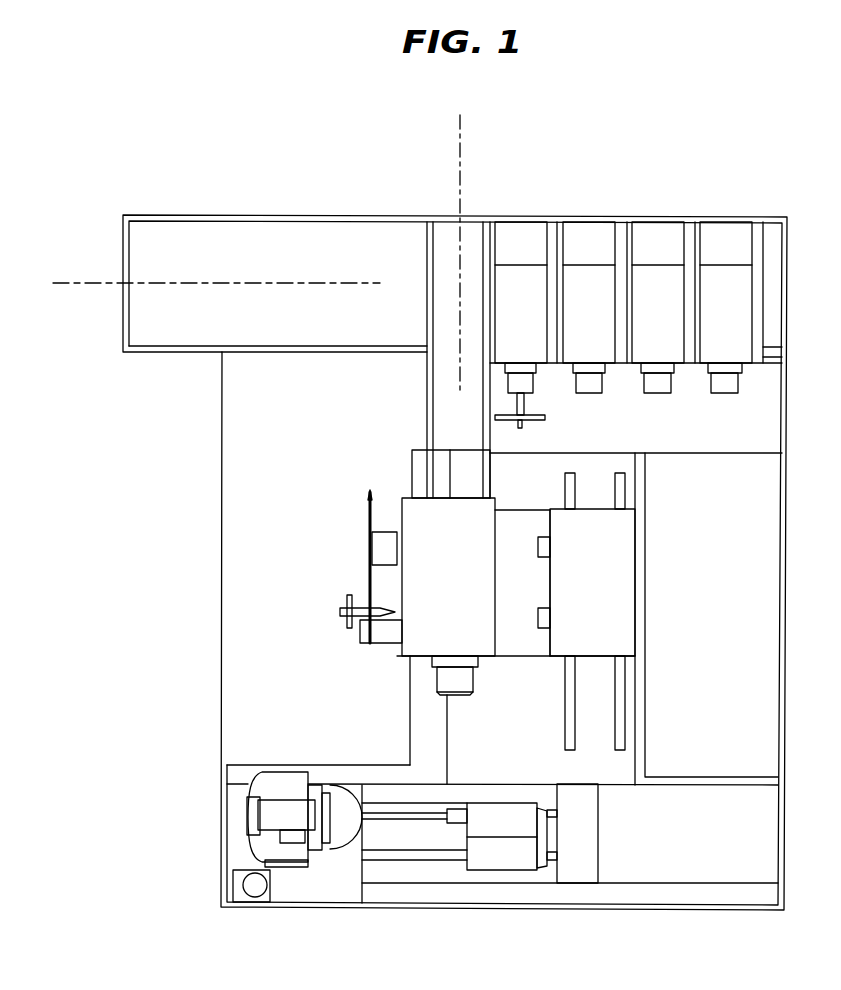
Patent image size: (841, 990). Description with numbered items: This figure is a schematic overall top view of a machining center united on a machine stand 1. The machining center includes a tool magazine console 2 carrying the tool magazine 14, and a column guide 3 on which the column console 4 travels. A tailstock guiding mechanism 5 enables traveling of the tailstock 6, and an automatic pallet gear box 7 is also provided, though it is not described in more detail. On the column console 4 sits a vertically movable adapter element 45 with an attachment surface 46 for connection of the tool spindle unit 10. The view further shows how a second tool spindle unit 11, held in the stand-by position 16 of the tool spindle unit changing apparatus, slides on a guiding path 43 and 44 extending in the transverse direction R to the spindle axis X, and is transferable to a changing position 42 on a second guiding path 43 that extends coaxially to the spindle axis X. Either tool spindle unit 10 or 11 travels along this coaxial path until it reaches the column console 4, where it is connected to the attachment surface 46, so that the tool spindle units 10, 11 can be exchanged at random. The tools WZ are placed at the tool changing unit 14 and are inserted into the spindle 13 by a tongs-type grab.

The machine stand 1 is at (214, 649).
The tool magazine console 2 is at (387, 537).
The column guide 3 is at (622, 698).
The column console 4 is at (622, 530).
The tailstock guiding mechanism 5 is at (422, 855).
The tailstock 6 is at (507, 825).
The automatic pallet gear box 7 is at (290, 850).
The tool spindle unit 10 is at (417, 640).
The tool spindle unit 11 is at (660, 238).
The spindle 13 is at (447, 680).
The tool magazine 14 is at (368, 508).
The stand-by position 16 is at (522, 195).
The changing position 42 is at (447, 235).
The guiding path 43 is at (430, 422).
The guiding path 44 is at (245, 215).
The adapter element 45 is at (517, 635).
The attachment surface 46 is at (518, 512).
The tools WZ is at (348, 603).
The transverse direction R is at (88, 283).
The spindle axis X is at (460, 140).